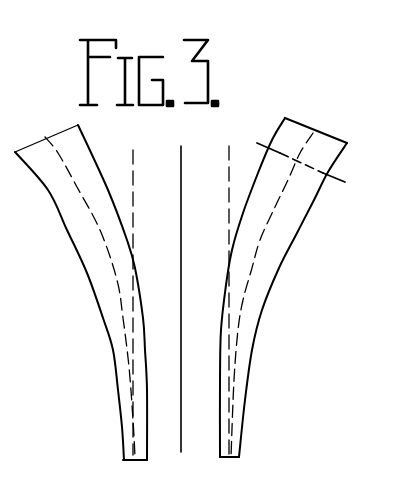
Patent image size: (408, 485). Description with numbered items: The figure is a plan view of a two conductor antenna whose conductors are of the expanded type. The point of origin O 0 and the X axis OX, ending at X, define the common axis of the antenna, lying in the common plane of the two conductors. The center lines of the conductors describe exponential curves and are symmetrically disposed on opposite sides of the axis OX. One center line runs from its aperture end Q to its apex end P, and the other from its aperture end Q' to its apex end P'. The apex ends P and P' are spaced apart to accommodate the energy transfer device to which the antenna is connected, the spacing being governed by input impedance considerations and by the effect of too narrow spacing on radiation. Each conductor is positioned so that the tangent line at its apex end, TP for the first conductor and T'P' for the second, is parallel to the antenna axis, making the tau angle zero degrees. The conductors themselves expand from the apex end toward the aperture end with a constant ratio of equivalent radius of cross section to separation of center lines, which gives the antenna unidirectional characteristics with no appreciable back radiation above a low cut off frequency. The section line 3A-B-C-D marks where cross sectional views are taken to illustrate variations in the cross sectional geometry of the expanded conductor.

The aperture end of second conductor center line Q' is at (81, 283).
The apex end of second conductor center line P' is at (135, 472).
The tangent line point for second conductor T' is at (136, 289).
The point of origin O is at (184, 285).
The X axis end point X is at (180, 473).
The tangent line point T is at (234, 290).
The aperture end of conductor center line Q is at (283, 280).
The apex end of conductor center line P is at (229, 471).
The section line 3A-B-C-D is at (257, 143).